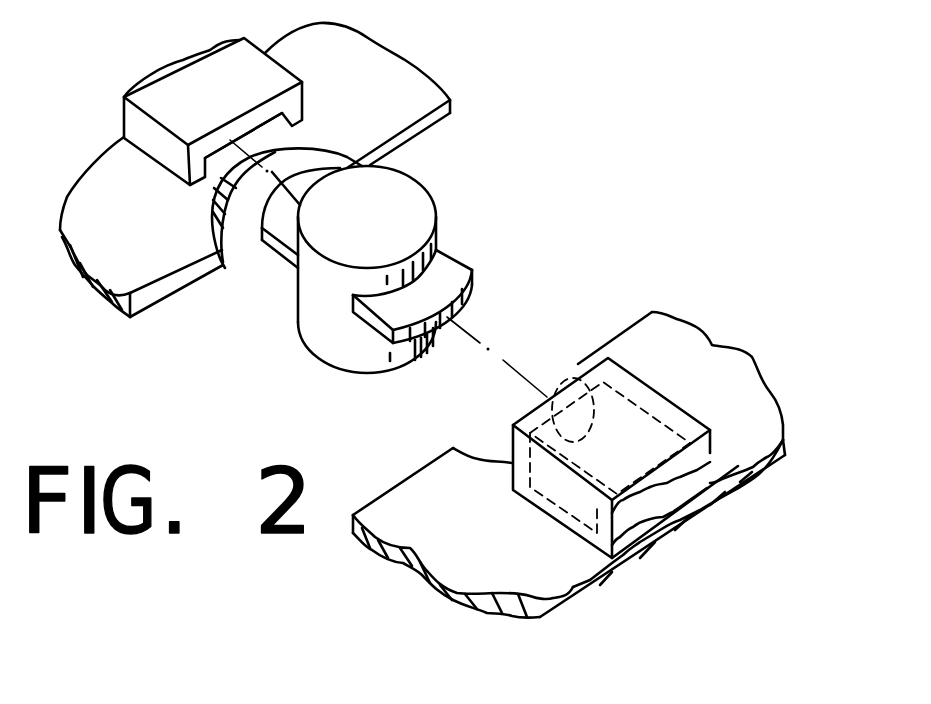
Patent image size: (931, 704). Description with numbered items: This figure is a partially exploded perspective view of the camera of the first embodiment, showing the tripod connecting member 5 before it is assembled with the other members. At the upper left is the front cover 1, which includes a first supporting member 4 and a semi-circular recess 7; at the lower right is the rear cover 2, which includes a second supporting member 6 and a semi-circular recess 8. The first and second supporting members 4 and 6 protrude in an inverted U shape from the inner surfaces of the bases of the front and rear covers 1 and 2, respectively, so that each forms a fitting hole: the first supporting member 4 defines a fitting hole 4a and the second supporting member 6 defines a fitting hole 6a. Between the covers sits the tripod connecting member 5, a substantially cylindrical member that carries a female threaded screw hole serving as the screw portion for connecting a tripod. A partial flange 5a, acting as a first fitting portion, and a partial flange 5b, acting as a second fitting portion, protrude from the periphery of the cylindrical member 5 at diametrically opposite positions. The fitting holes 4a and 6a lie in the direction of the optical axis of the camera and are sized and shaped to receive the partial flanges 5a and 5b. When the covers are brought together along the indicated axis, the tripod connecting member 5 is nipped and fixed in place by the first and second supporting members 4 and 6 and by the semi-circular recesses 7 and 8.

The front cover 1 is at (377, 72).
The rear cover 2 is at (733, 377).
The first supporting member 4 is at (180, 80).
The fitting hole 4a is at (271, 127).
The tripod connecting member 5 is at (407, 223).
The partial flange 5a is at (283, 219).
The partial flange 5b is at (450, 277).
The second supporting member 6 is at (653, 400).
The fitting hole 6a is at (563, 375).
The semi-circular recess 7 is at (241, 175).
The semi-circular recess 8 is at (483, 420).